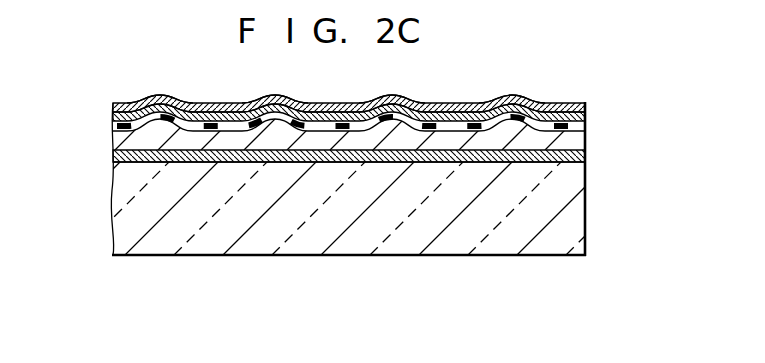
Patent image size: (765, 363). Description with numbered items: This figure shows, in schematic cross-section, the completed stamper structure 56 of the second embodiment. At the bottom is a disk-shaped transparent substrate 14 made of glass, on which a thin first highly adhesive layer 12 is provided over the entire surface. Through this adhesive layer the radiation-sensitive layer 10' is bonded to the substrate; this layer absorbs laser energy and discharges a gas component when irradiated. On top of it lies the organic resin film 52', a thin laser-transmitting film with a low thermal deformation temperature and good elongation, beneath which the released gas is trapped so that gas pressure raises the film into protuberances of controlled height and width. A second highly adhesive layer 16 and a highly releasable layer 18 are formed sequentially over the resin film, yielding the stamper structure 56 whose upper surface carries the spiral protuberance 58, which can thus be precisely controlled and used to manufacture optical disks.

The radiation-sensitive layer 10' is at (314, 133).
The first highly adhesive layer 12 is at (112, 156).
The transparent substrate 14 is at (497, 247).
The second highly adhesive layer 16 is at (587, 108).
The highly releasable layer 18 is at (571, 101).
The organic resin film 52' is at (382, 129).
The stamper structure 56 is at (592, 207).
The spiral protuberance 58 is at (394, 96).